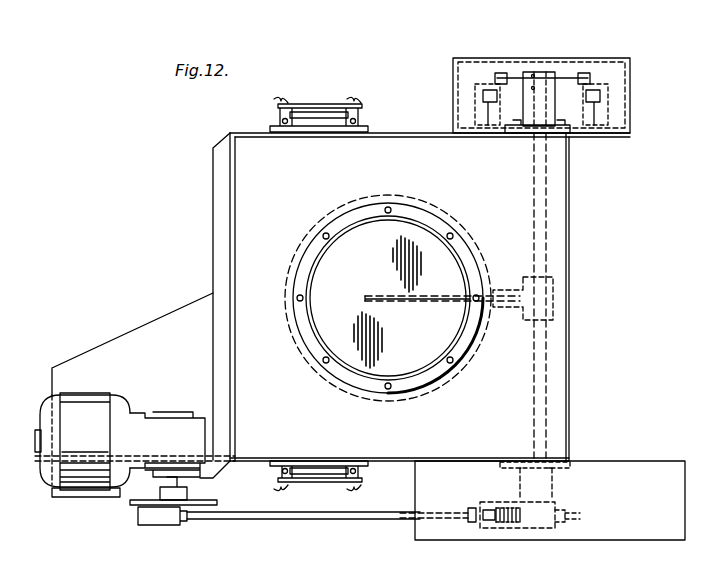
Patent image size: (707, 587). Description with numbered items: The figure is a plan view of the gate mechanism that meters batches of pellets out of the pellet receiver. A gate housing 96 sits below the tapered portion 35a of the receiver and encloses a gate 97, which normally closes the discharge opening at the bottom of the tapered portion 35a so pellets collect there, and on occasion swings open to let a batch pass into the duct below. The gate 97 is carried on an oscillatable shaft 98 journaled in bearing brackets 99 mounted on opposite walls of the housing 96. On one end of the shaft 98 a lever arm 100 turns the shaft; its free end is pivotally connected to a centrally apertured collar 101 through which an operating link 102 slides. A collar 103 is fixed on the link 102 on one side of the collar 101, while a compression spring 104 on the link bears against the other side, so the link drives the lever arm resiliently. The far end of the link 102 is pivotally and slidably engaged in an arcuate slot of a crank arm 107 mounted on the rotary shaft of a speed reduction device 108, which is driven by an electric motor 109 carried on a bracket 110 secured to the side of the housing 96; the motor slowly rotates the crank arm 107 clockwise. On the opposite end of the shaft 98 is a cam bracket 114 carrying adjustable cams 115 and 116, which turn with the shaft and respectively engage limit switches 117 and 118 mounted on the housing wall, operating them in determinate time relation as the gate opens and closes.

The gate housing 96 is at (245, 211).
The tapered portion 35a is at (405, 220).
The gate 97 is at (452, 270).
The oscillatable shaft 98 is at (548, 362).
The bearing bracket 99 is at (550, 107).
The lever arm 100 is at (520, 530).
The collar 101 is at (490, 523).
The operating link 102 is at (323, 516).
The collar 103 is at (465, 522).
The compression spring 104 is at (500, 525).
The crank arm 107 is at (205, 510).
The speed reduction device 108 is at (172, 425).
The electric motor 109 is at (72, 395).
The bracket 110 is at (163, 325).
The cam bracket 114 is at (545, 72).
The cam 115 is at (500, 74).
The cam 116 is at (588, 76).
The limit switch 117 is at (495, 106).
The limit switch 118 is at (598, 106).